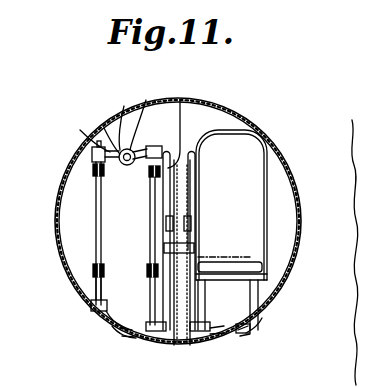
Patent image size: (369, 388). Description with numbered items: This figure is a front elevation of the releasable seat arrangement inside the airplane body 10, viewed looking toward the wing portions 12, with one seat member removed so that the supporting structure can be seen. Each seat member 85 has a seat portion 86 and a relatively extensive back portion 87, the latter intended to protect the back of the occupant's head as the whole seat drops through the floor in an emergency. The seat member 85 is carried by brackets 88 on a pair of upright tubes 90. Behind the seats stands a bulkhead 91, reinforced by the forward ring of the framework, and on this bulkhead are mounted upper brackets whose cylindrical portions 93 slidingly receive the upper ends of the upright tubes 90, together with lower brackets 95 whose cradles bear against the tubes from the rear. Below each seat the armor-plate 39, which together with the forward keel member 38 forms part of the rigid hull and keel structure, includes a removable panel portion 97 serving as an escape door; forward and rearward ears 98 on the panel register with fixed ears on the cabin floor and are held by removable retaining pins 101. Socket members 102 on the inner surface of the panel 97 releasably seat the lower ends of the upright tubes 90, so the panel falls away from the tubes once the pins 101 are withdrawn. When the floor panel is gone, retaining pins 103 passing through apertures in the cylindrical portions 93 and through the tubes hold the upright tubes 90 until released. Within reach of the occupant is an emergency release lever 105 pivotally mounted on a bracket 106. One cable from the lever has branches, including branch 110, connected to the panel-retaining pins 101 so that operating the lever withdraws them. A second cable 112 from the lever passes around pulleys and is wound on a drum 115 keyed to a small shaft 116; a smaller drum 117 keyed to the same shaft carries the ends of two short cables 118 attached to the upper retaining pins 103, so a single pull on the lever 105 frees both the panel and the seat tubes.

The airplane body 10 is at (273, 110).
The wing portion 12 is at (231, 248).
The forward keel member 38 is at (180, 346).
The armor-plate 39 is at (272, 297).
The seat member 85 is at (291, 218).
The seat portion 86 is at (252, 264).
The back portion 87 is at (255, 174).
The bracket 88 is at (92, 171).
The upright tube 90 is at (95, 227).
The bulkhead 91 is at (228, 101).
The cylindrical portion 93 is at (91, 154).
The lower bracket 95 is at (97, 288).
The removable panel portion 97 is at (105, 317).
The ear 98 is at (115, 330).
The retaining pin 101 is at (120, 338).
The socket member 102 is at (92, 306).
The retaining pin 103 is at (146, 100).
The emergency release lever 105 is at (166, 223).
The bracket 106 is at (164, 248).
The cable branch 110 is at (218, 338).
The cable 112 is at (180, 99).
The drum 115 is at (132, 114).
The small shaft 116 is at (95, 197).
The smaller drum 117 is at (102, 128).
The short cable 118 is at (90, 130).